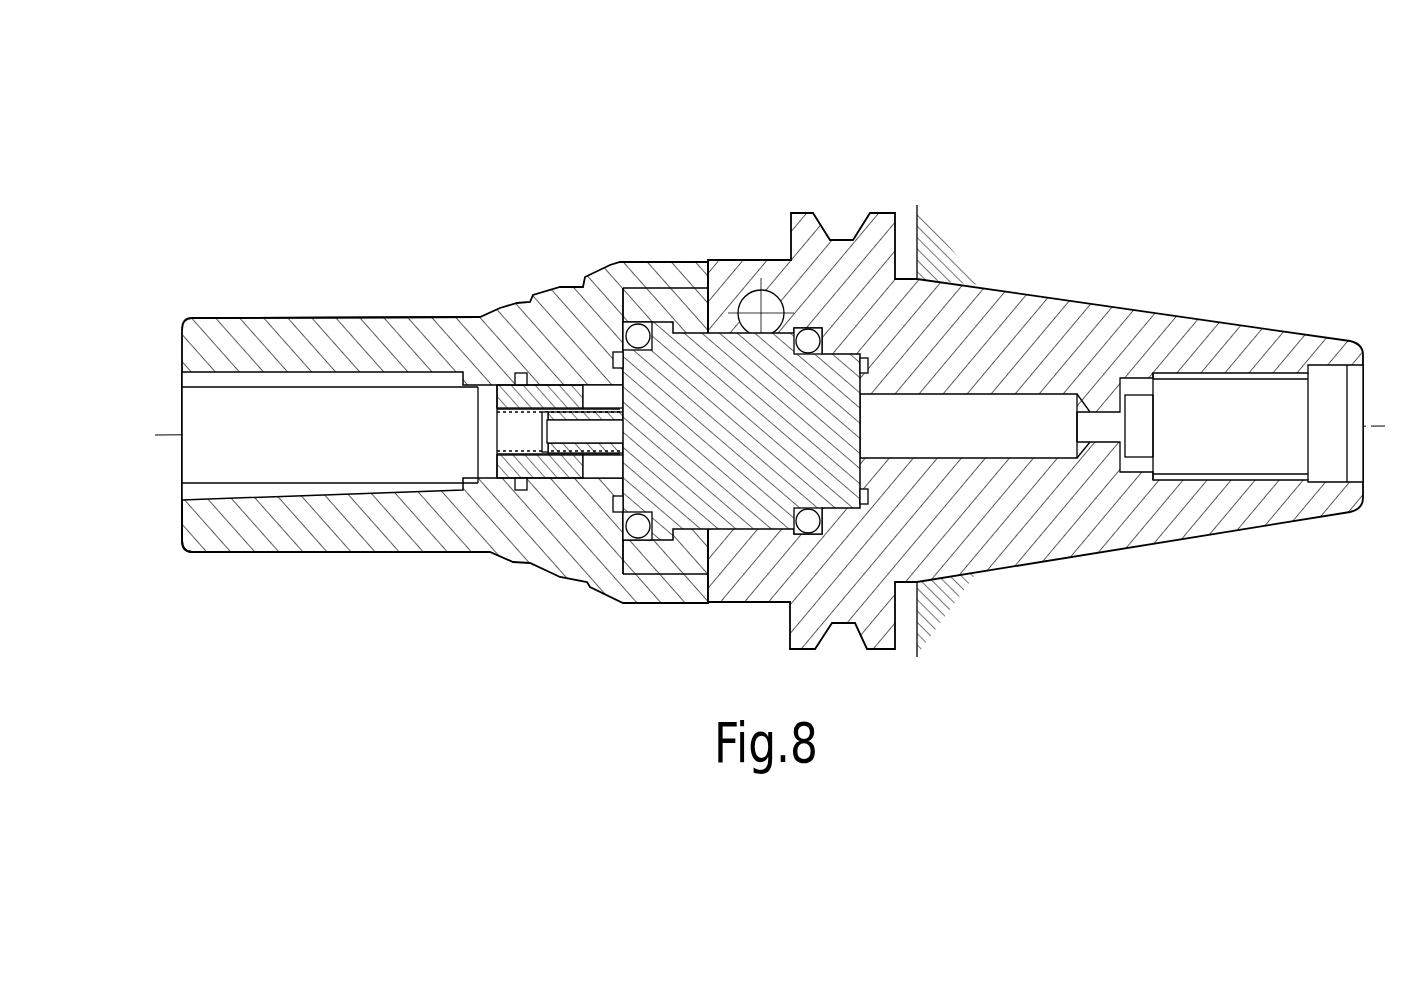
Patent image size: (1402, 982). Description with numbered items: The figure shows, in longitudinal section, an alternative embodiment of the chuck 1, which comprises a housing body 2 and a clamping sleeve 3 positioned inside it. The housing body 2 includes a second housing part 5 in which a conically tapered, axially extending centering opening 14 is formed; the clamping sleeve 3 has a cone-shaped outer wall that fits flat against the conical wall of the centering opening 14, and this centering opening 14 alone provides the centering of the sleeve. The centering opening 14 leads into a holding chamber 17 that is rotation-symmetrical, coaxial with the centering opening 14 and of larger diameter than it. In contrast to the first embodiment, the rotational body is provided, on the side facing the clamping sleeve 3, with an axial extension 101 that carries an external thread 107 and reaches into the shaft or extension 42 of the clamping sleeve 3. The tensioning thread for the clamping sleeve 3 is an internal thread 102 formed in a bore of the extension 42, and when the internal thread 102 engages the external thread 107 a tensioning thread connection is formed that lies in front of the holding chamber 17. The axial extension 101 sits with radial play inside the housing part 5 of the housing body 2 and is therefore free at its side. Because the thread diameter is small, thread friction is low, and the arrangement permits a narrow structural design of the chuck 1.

The chuck 1 is at (920, 155).
The housing body 2 is at (638, 228).
The clamping sleeve 3 is at (182, 388).
The second housing part 5 is at (453, 318).
The centering opening 14 is at (173, 505).
The holding chamber 17 is at (695, 533).
The extension of the clamping sleeve 42 is at (550, 393).
The axial extension 101 is at (598, 410).
The internal thread 102 is at (495, 423).
The external thread 107 is at (605, 480).